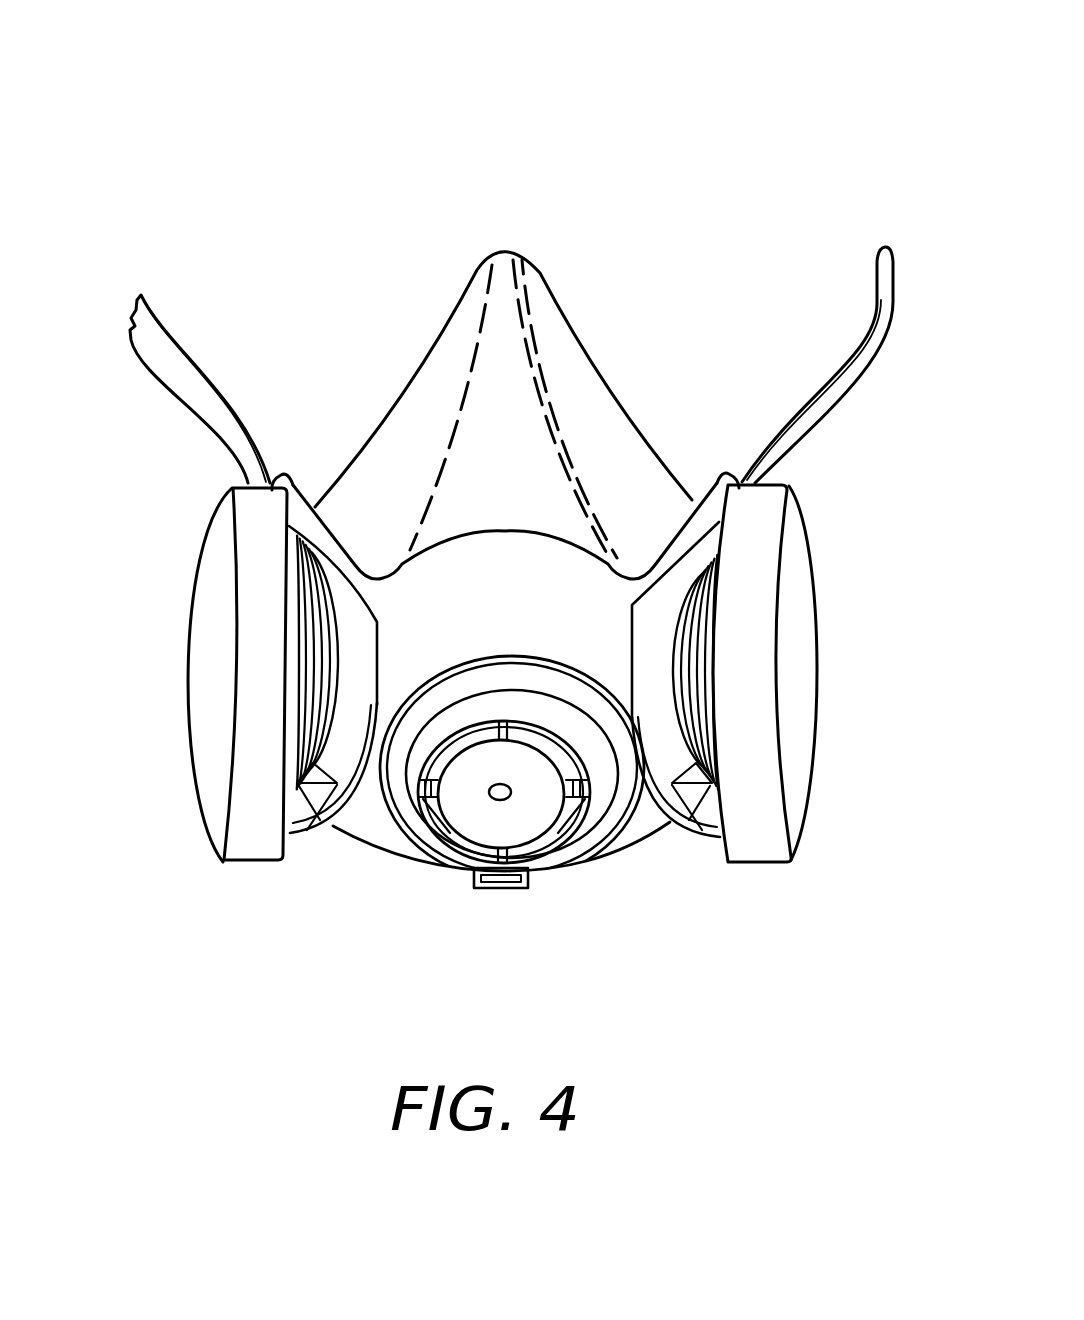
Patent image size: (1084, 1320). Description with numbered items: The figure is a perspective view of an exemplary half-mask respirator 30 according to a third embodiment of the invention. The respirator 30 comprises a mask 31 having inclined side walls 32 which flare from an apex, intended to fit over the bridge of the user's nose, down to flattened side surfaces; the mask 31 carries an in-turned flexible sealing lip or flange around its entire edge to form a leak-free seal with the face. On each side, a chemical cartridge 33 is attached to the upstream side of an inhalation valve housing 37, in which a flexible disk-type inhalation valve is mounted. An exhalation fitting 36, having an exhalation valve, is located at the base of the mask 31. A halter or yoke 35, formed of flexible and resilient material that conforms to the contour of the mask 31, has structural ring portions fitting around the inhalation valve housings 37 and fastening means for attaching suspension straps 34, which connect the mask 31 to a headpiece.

The respirator 30 is at (384, 158).
The mask 31 is at (535, 279).
The inclined side walls 32 is at (360, 467).
The chemical cartridges 33 is at (217, 779).
The suspension straps 34 is at (207, 387).
The halter (or yoke) 35 is at (408, 665).
The exhalation fitting 36 is at (528, 822).
The inhalation valve housings 37 is at (338, 826).